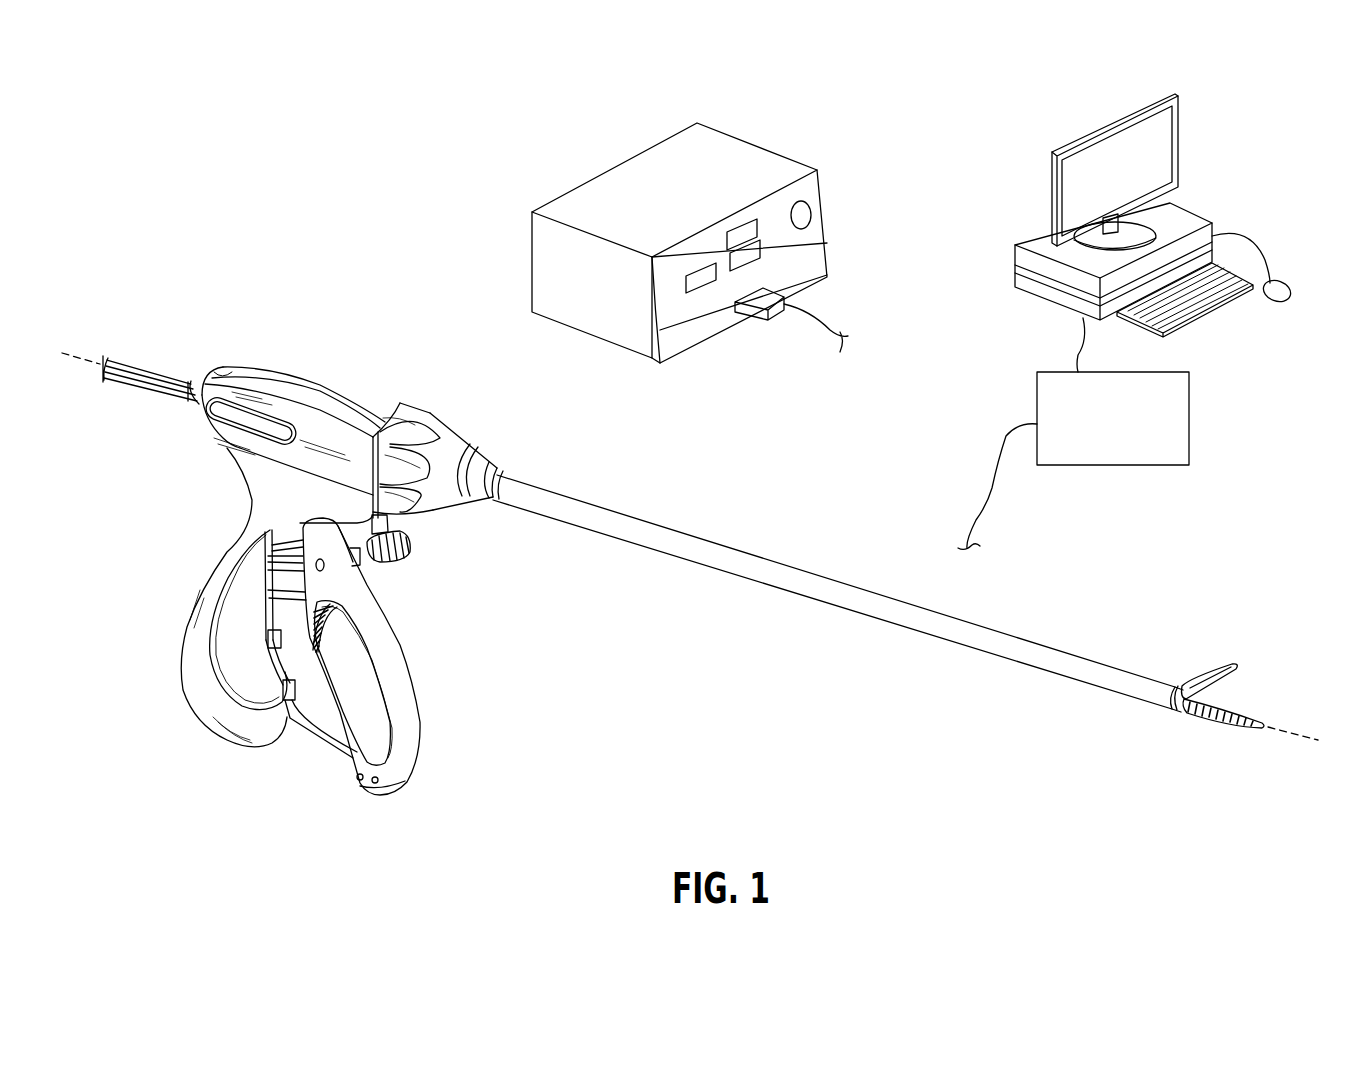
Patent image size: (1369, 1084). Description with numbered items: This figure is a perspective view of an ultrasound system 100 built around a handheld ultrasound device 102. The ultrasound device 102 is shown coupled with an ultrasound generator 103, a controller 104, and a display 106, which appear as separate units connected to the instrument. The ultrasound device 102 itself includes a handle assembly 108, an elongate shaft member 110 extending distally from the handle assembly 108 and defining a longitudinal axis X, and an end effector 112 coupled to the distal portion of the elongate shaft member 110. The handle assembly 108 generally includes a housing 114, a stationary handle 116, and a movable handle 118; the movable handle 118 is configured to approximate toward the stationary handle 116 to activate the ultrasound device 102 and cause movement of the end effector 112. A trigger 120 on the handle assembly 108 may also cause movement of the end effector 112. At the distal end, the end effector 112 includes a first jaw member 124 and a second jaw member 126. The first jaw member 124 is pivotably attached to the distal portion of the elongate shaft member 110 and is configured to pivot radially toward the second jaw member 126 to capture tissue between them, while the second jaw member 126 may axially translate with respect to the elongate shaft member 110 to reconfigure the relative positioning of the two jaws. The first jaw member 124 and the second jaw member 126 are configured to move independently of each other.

The ultrasound system 100 is at (345, 170).
The ultrasound device 102 is at (170, 323).
The ultrasound generator 103 is at (748, 140).
The controller 104 is at (1020, 362).
The display 106 is at (1048, 135).
The handle assembly 108 is at (311, 361).
The elongate shaft member 110 is at (588, 483).
The end effector 112 is at (1151, 664).
The housing 114 is at (233, 447).
The stationary handle 116 is at (183, 690).
The movable handle 118 is at (410, 703).
The trigger 120 is at (405, 548).
The first jaw member 124 is at (1203, 677).
The second jaw member 126 is at (1218, 722).